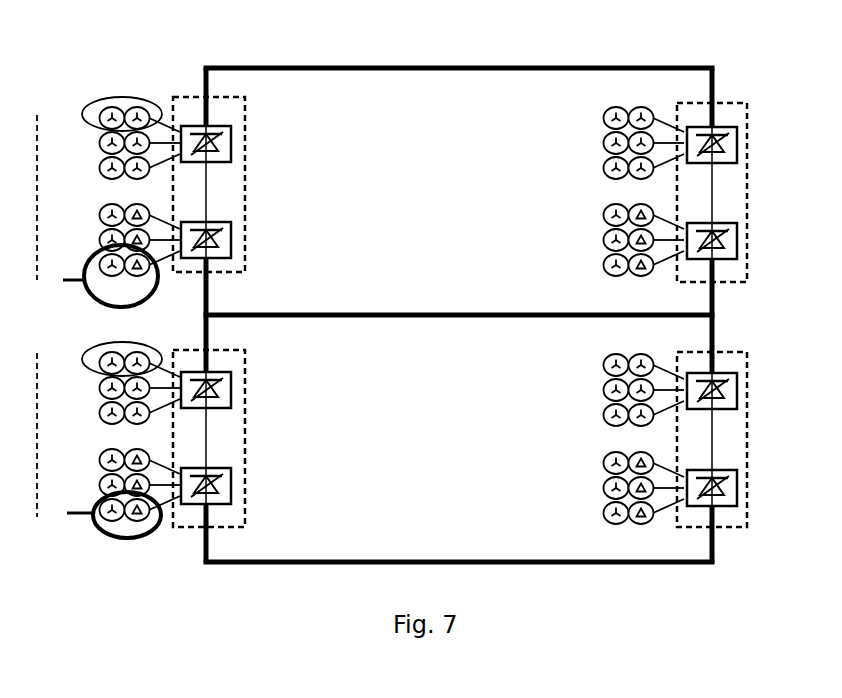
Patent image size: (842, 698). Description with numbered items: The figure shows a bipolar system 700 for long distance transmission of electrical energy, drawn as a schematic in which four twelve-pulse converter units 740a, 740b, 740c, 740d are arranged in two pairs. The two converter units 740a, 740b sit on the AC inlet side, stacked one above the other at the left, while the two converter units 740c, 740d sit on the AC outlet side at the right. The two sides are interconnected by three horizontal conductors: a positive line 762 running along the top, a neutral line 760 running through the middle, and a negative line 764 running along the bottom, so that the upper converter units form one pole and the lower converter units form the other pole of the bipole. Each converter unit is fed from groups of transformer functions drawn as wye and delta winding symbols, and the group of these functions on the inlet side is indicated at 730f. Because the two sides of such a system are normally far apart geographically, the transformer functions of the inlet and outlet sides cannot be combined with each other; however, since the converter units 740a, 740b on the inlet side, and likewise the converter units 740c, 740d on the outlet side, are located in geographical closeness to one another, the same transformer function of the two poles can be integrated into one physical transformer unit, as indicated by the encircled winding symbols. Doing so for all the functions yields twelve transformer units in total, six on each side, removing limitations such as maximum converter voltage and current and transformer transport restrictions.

The bipolar system 700 is at (158, 52).
The transformers 730f is at (99, 318).
The 12-pulse converter unit 740a is at (232, 95).
The 12-pulse converter unit 740b is at (232, 348).
The 12-pulse converter unit 740c is at (738, 100).
The 12-pulse converter unit 740d is at (738, 348).
The neutral line 760 is at (472, 318).
The positive line 762 is at (460, 71).
The negative line 764 is at (330, 565).